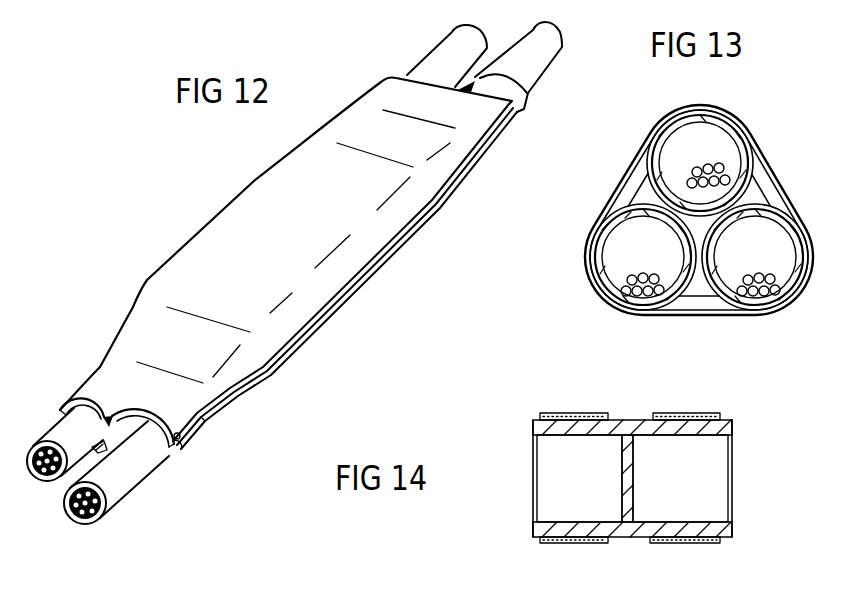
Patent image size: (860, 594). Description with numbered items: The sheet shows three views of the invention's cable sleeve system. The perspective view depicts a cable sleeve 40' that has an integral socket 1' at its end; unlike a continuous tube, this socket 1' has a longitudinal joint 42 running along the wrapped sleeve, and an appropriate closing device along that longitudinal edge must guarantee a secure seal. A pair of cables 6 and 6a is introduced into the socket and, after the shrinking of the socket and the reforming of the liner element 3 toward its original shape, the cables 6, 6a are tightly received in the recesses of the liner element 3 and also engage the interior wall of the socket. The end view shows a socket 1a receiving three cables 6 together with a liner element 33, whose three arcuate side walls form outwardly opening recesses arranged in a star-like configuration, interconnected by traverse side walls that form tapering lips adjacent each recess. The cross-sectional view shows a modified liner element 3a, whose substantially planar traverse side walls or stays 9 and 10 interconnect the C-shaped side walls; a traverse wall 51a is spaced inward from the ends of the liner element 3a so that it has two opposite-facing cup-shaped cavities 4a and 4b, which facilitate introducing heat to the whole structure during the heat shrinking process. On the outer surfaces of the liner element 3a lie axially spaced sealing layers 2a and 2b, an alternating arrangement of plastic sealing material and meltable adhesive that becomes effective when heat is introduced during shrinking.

In FIG. 12, the socket 1' is at (286, 263).
In FIG. 12, the cable 6a is at (428, 63).
In FIG. 12, the cable 6 is at (523, 47).
In FIG. 13, the cable 6 is at (755, 237).
In FIG. 12, the liner element 3 is at (527, 95).
In FIG. 12, the cable sleeve 40' is at (345, 276).
In FIG. 12, the longitudinal joint 42 is at (208, 408).
In FIG. 13, the socket 1a is at (743, 130).
In FIG. 13, the liner element 33 is at (630, 177).
In FIG. 14, the traverse side wall 9 is at (553, 428).
In FIG. 14, the traverse side wall 10 is at (570, 532).
In FIG. 14, the cavity 4a is at (550, 480).
In FIG. 14, the cavity 4b is at (723, 483).
In FIG. 14, the wall 51a is at (628, 490).
In FIG. 14, the liner element 3a is at (646, 412).
In FIG. 14, the sealing layer 2a is at (587, 543).
In FIG. 14, the sealing layer 2b is at (675, 543).